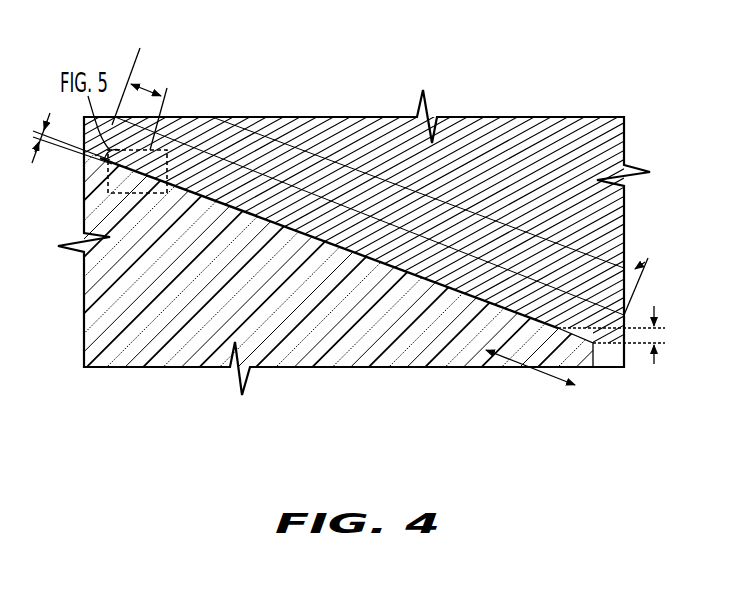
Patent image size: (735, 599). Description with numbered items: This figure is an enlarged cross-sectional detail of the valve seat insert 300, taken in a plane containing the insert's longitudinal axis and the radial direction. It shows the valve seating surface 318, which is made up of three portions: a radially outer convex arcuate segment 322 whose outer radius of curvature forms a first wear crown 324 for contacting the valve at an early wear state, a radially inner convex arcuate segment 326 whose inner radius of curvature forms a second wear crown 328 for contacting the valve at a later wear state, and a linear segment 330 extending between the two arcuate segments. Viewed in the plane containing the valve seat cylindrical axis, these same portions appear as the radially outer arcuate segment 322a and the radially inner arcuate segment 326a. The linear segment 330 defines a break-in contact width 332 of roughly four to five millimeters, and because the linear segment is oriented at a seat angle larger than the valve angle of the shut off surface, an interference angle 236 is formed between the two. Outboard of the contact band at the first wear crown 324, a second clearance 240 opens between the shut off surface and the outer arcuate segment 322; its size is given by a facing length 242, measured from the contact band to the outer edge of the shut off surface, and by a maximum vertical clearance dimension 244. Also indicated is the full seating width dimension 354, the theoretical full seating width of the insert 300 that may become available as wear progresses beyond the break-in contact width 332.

The valve seat insert 300 is at (615, 110).
The valve seating surface 318 is at (428, 274).
The radially outer convex arcuate segment 322 is at (557, 327).
The radially outer arcuate segment 322a is at (636, 266).
The first wear crown 324 is at (517, 304).
The radially inner convex arcuate segment 326 is at (124, 149).
The radially inner arcuate segment 326a is at (141, 165).
The second wear crown 328 is at (153, 137).
The linear segment 330 is at (353, 248).
The break-in contact width 332 is at (308, 190).
The full seating width dimension 354 is at (358, 165).
The interference angle 236 is at (43, 160).
The second clearance 240 is at (557, 333).
The facing length 242 is at (533, 366).
The maximum vertical clearance dimension 244 is at (657, 360).